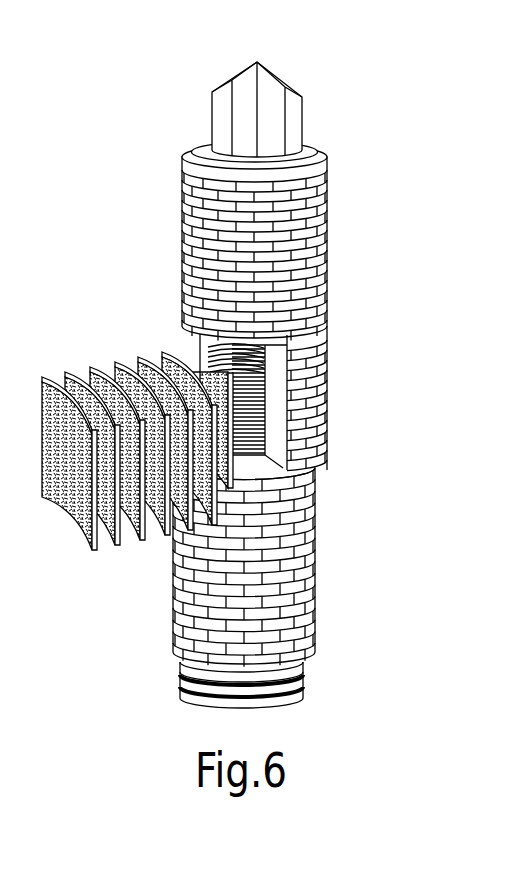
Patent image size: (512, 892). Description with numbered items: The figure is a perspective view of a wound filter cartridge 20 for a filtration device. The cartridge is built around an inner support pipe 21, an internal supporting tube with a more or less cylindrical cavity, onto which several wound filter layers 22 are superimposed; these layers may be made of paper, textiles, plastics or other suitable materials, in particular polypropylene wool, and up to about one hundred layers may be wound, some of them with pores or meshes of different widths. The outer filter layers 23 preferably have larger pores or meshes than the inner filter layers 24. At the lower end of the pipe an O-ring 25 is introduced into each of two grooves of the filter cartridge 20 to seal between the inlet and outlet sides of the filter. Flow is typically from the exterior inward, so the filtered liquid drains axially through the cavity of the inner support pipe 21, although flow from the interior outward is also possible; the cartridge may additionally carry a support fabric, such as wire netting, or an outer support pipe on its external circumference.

The wound filter cartridge 20 is at (354, 124).
The inner support pipe 21 is at (322, 360).
The wound filter layers 22 is at (133, 433).
The outer filter layers 23 is at (67, 373).
The inner filter layers 24 is at (163, 352).
The O-ring 25 is at (298, 688).